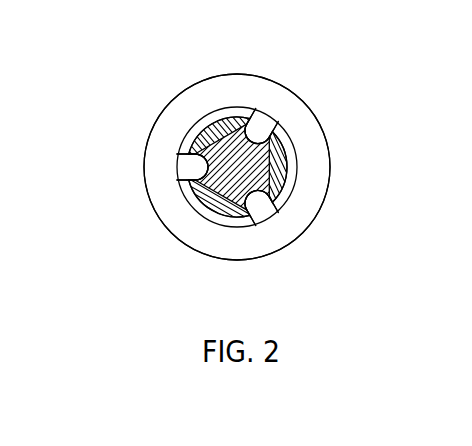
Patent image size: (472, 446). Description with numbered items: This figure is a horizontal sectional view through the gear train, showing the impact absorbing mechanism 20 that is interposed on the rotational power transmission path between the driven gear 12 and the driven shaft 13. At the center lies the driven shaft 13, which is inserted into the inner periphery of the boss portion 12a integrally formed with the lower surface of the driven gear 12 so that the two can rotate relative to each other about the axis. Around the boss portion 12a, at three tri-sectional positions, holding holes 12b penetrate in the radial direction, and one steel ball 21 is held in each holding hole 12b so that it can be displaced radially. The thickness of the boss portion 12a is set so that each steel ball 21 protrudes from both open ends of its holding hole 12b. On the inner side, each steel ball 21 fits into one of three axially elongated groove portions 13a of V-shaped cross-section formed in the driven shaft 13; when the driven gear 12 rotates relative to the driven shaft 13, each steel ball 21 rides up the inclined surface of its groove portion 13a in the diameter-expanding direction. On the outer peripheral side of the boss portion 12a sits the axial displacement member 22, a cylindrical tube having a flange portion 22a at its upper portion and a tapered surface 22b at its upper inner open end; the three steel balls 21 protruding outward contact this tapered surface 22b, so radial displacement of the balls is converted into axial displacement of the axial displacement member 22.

The impact absorbing mechanism 20 is at (155, 89).
The axial displacement member 22 is at (186, 179).
The flange portion 22a is at (151, 133).
The tapered surface 22b is at (198, 212).
The driven gear 12 is at (223, 138).
The boss portion 12a is at (212, 122).
The holding hole 12b is at (276, 126).
The driven shaft 13 is at (289, 166).
The groove portion 13a is at (250, 121).
The steel ball 21 is at (256, 136).